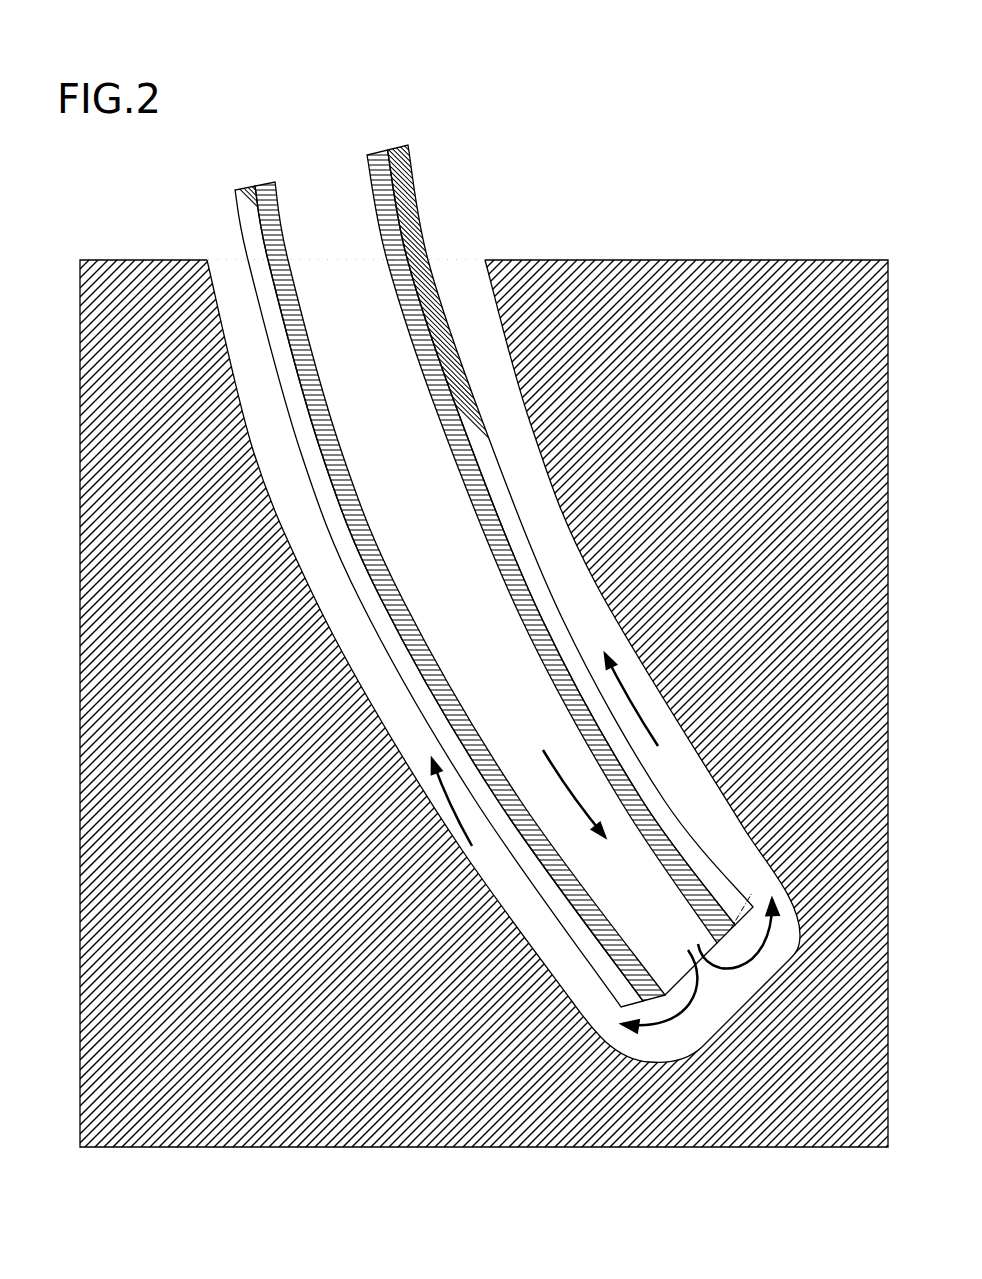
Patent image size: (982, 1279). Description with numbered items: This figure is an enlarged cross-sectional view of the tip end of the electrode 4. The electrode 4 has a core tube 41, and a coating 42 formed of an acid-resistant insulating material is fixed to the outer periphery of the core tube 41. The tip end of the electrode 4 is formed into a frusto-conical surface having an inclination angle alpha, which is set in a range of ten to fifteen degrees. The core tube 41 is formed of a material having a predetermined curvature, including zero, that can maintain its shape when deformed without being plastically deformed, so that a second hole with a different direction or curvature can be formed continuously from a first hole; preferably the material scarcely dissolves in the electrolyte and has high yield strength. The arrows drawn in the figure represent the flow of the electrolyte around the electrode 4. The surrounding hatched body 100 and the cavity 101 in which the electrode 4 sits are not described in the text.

The electrode 4 is at (491, 505).
The core tube 41 is at (282, 210).
The coating 42 is at (428, 237).
The ground 100 is at (692, 280).
The borehole 101 is at (578, 566).